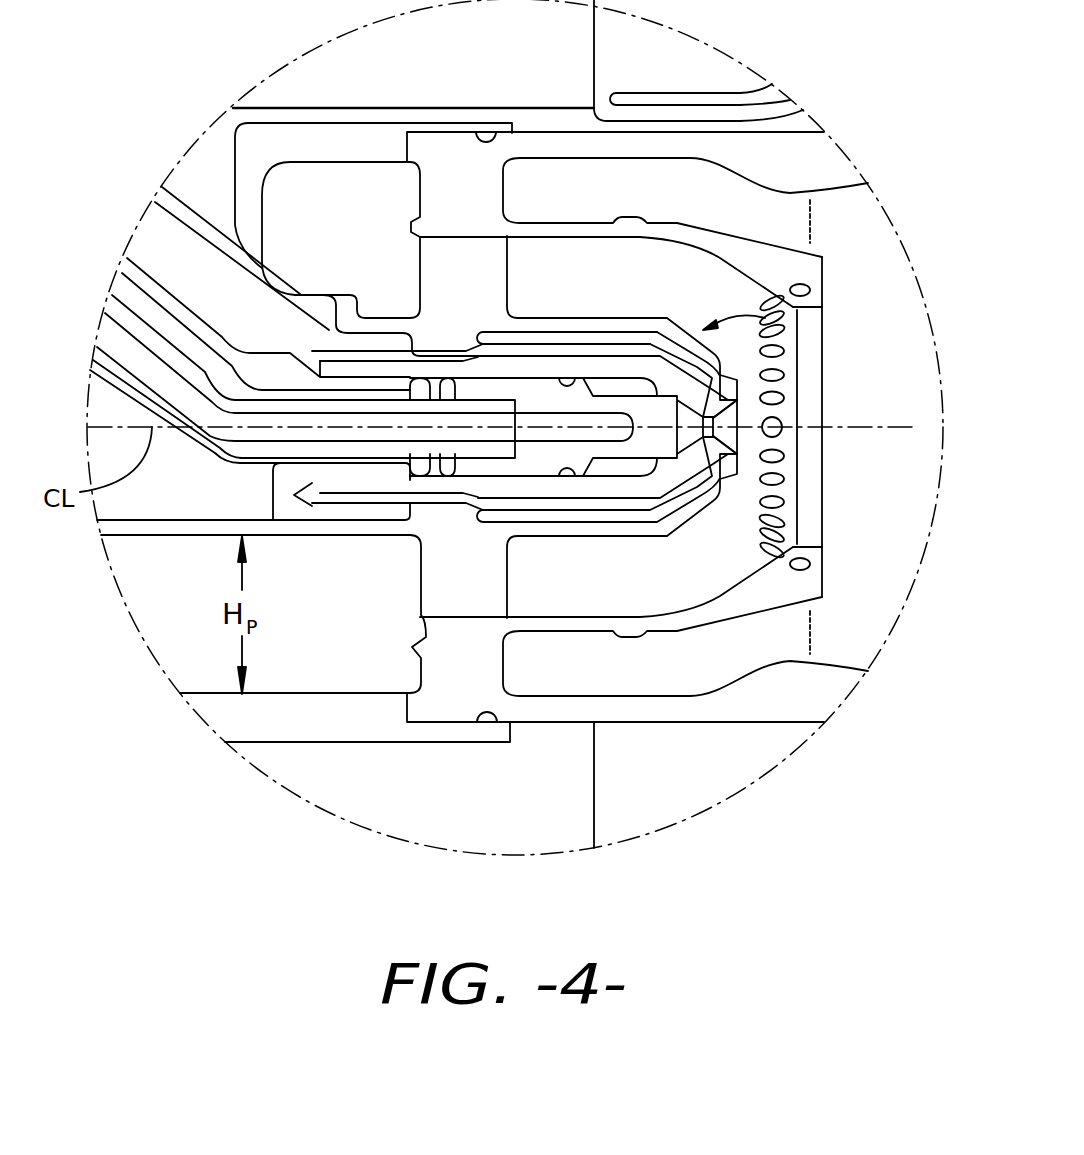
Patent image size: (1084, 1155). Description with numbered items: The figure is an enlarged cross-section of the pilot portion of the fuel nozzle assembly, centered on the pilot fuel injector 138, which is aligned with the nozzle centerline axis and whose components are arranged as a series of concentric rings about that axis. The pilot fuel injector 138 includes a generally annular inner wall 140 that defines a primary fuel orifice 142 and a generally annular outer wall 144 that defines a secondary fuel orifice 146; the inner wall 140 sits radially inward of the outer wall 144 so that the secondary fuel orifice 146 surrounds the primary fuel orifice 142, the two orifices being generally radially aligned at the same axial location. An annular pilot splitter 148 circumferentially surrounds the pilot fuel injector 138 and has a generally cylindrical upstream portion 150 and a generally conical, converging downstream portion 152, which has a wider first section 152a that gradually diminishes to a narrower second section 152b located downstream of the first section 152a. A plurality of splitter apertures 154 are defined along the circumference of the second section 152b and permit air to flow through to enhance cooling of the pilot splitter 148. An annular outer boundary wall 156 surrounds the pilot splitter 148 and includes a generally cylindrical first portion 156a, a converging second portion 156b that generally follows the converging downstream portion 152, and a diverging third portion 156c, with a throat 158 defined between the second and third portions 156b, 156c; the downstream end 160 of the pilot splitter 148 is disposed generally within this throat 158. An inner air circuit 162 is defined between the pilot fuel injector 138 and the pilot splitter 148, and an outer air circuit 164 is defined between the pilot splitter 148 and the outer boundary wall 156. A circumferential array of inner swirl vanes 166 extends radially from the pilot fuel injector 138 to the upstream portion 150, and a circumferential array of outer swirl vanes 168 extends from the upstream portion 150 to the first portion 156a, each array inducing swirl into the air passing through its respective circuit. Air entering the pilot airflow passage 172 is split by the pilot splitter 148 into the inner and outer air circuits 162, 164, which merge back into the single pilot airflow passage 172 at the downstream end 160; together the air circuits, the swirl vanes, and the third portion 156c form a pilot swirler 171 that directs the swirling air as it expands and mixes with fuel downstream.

The pilot fuel injector 138 is at (826, 336).
The inner wall 140 is at (537, 373).
The primary fuel orifice 142 is at (740, 410).
The outer wall 144 is at (570, 350).
The secondary fuel orifice 146 is at (740, 387).
The pilot splitter 148 is at (767, 267).
The upstream portion 150 is at (380, 212).
The downstream portion 152 is at (703, 206).
The first section 152a is at (665, 222).
The second section 152b is at (840, 293).
The splitter apertures 154 is at (795, 498).
The outer boundary wall 156 is at (556, 143).
The first portion 156a is at (557, 710).
The second portion 156b is at (768, 698).
The third portion 156c is at (831, 688).
The throat 158 is at (846, 632).
The downstream end 160 is at (828, 502).
The inner air circuit 162 is at (540, 597).
The outer air circuit 164 is at (540, 660).
The inner swirl vanes 166 is at (443, 557).
The outer swirl vanes 168 is at (423, 188).
The pilot swirler 171 is at (862, 584).
The pilot airflow passage 172 is at (165, 618).